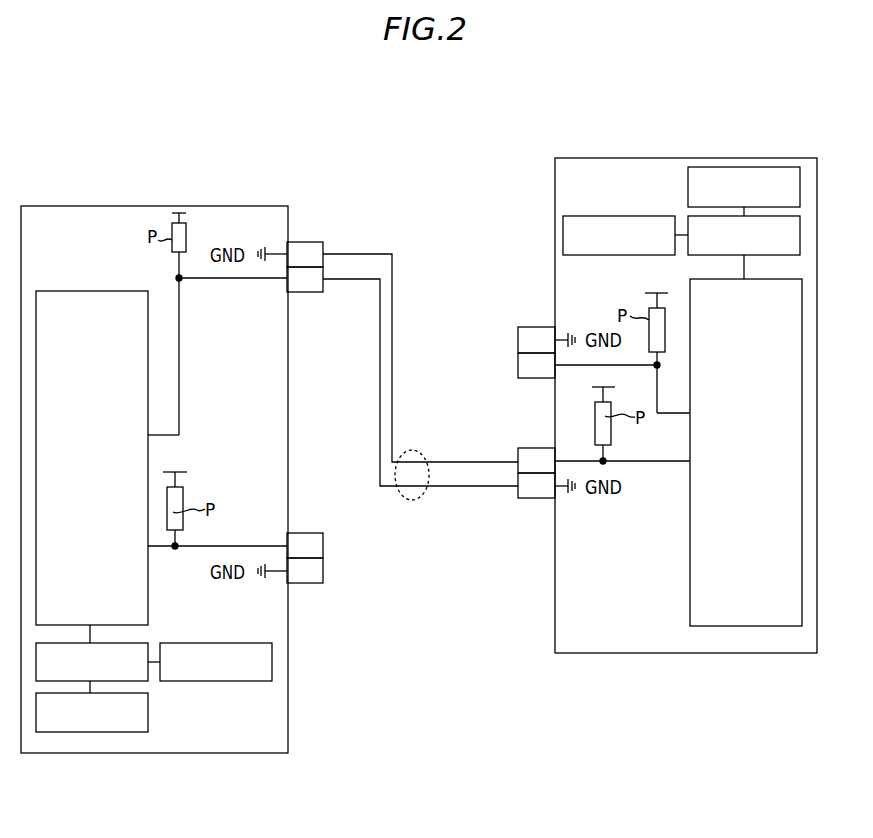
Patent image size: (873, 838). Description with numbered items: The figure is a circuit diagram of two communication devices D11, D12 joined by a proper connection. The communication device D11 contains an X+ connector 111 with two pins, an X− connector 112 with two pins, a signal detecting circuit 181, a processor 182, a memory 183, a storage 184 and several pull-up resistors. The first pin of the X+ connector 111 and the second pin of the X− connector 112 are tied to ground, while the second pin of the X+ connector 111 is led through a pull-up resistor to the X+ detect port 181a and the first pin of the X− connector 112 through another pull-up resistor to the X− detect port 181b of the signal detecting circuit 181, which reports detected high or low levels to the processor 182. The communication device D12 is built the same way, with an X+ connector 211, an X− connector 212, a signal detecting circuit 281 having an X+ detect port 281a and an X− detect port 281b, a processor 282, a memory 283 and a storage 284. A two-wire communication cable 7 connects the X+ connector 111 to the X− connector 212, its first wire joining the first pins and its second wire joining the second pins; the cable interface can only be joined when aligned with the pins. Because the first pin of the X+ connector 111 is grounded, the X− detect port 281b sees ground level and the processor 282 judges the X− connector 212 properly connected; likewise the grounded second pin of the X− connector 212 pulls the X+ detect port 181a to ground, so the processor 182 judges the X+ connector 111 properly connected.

The communication cable 7 is at (410, 451).
The X+ connector 111 is at (323, 242).
The X− connector 112 is at (313, 583).
The signal detecting circuit 181 is at (83, 291).
The X+ detect port 181a is at (148, 440).
The X− detect port 181b is at (148, 548).
The processor 182 is at (65, 643).
The memory 183 is at (148, 713).
The storage 184 is at (247, 681).
The X+ connector 211 is at (538, 378).
The X− connector 212 is at (537, 500).
The signal detecting circuit 281 is at (690, 605).
The X+ detect port 281a is at (690, 414).
The X− detect port 281b is at (690, 463).
The processor 282 is at (703, 255).
The memory 283 is at (790, 167).
The storage 284 is at (593, 216).
The communication device D11 is at (177, 201).
The communication device D12 is at (666, 153).